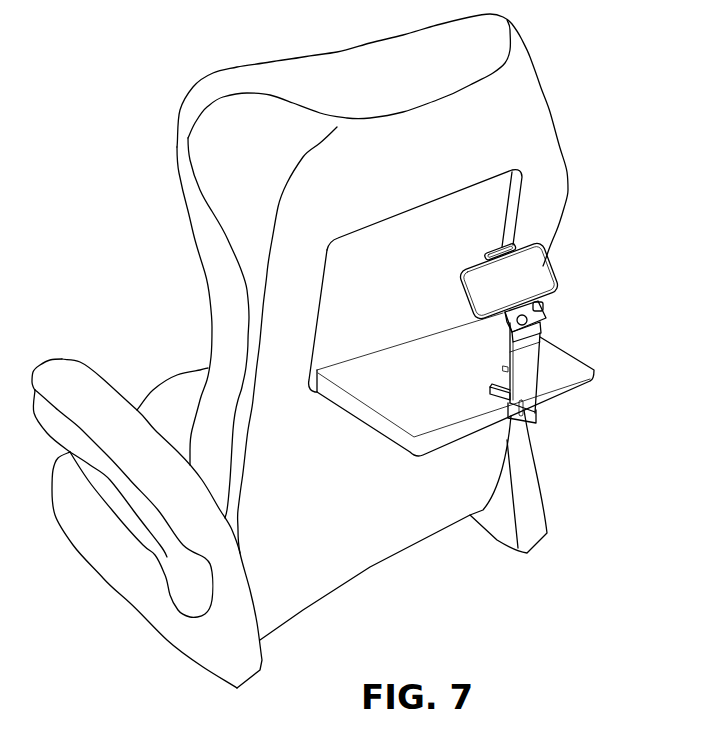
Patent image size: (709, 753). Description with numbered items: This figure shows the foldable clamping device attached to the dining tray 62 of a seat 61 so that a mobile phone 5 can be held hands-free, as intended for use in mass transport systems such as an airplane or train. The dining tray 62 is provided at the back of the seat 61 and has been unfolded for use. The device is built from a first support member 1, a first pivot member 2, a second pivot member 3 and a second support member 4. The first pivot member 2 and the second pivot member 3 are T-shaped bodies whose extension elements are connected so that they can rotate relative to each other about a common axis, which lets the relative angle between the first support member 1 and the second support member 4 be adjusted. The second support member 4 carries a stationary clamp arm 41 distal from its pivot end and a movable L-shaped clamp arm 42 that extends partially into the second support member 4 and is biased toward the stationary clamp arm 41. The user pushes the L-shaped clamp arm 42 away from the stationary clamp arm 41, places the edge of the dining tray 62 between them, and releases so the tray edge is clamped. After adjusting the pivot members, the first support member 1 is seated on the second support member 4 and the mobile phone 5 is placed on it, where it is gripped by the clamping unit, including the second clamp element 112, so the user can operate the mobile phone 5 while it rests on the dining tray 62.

The seat 61 is at (530, 121).
The dining tray 62 is at (577, 367).
The second clamp element 112 is at (506, 248).
The mobile phone 5 is at (540, 277).
The first support member 1 is at (541, 308).
The first pivot member 2 is at (543, 317).
The second pivot member 3 is at (541, 330).
The second support member 4 is at (530, 363).
The stationary clamp arm 41 is at (497, 390).
The movable L-shaped clamp arm 42 is at (527, 418).